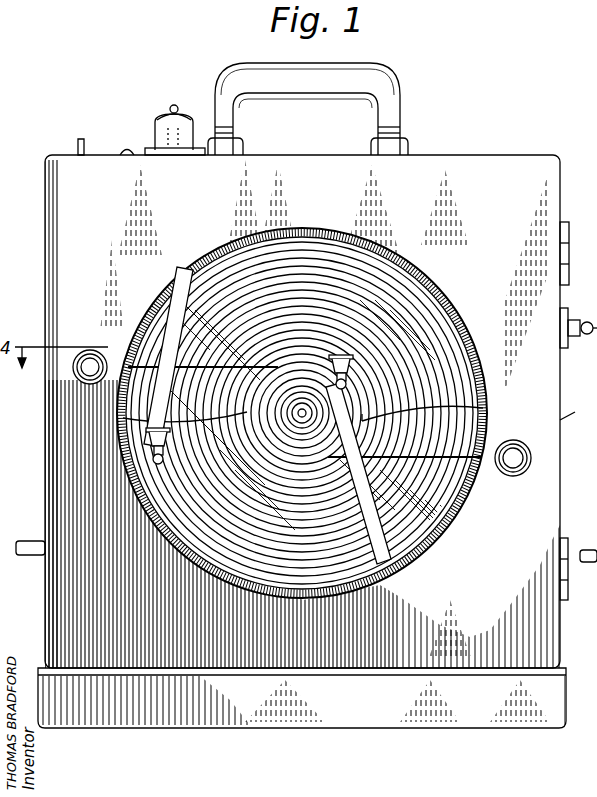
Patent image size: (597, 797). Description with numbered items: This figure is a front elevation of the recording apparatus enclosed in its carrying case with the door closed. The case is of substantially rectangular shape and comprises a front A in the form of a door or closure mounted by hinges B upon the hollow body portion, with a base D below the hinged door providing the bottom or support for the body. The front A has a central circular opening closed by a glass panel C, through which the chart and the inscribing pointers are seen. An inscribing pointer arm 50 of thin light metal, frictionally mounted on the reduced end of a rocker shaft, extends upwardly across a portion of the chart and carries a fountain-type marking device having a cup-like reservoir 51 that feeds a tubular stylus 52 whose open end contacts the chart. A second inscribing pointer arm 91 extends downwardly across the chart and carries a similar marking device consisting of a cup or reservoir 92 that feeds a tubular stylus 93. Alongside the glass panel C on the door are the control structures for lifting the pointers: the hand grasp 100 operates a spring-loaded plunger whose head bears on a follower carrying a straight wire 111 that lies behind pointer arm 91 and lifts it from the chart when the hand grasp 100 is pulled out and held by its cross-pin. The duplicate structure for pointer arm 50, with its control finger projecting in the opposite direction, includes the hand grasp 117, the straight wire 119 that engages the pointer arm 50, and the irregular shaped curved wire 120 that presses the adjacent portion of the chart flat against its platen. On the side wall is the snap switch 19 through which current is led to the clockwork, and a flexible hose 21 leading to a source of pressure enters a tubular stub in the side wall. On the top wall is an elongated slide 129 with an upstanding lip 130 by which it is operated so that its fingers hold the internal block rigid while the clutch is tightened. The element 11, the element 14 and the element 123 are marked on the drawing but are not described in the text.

The front A is at (55, 230).
The hinges B is at (572, 236).
The glass panel C is at (450, 310).
The base D is at (203, 716).
The side member 11 is at (578, 410).
The pen holder 14 is at (370, 338).
The snap switch 19 is at (572, 322).
The flexible hose 21 is at (30, 540).
The inscribing pointer arm 50 is at (364, 578).
The cup-like reservoir 51 is at (354, 372).
The tubular stylus 52 is at (349, 386).
The inscribing pointer arm 91 is at (180, 302).
The cup or reservoir 92 is at (154, 448).
The tubular stylus 93 is at (157, 462).
The hand grasp 100 is at (92, 384).
The wire 111 is at (136, 352).
The hand grasp 117 is at (513, 472).
The straight wire 119 is at (417, 462).
The irregular shaped curved wire 120 is at (422, 423).
The holder 123 is at (148, 435).
The slide 129 is at (100, 151).
The lip 130 is at (78, 138).